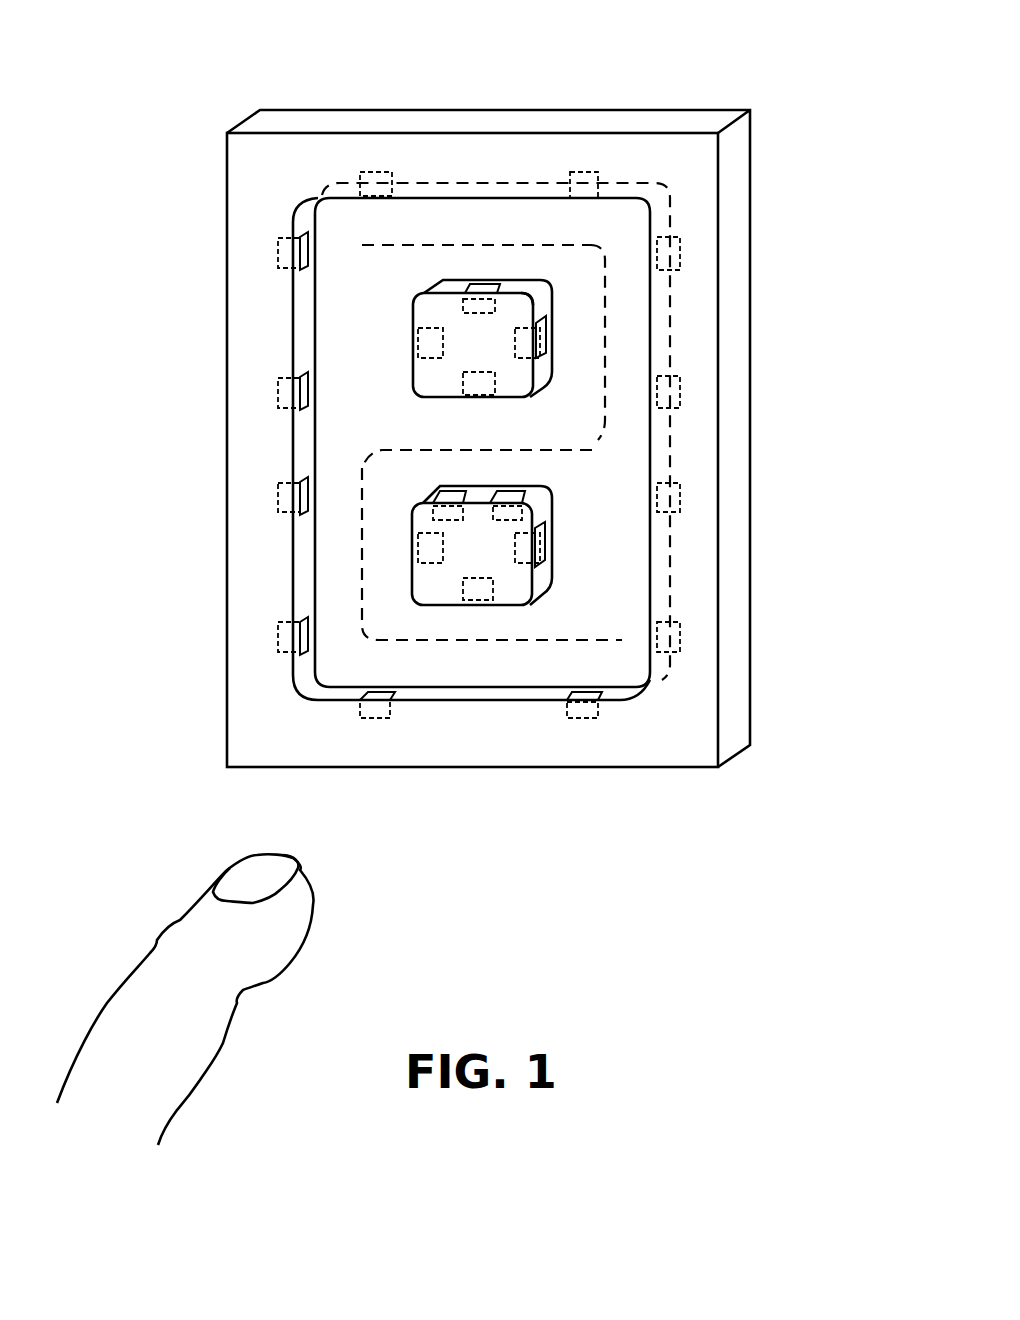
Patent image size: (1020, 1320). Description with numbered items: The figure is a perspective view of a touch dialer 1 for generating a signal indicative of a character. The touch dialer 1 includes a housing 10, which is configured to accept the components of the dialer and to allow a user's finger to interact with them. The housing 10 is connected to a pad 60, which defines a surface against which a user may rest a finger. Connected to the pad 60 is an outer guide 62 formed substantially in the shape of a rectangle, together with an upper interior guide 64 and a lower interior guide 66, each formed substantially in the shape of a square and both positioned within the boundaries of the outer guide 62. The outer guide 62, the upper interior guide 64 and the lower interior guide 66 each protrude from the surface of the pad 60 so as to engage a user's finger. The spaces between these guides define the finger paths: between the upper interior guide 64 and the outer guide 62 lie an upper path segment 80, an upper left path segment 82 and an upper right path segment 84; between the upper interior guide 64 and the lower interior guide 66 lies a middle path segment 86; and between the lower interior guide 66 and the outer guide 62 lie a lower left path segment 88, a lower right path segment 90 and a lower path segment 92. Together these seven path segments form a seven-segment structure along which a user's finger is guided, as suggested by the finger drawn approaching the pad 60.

The touch dialer 1 is at (730, 107).
The housing 10 is at (718, 248).
The pad 60 is at (367, 277).
The outer guide 62 is at (262, 520).
The upper interior guide 64 is at (512, 392).
The lower interior guide 66 is at (513, 591).
The upper path segment 80 is at (468, 258).
The upper left path segment 82 is at (367, 339).
The upper right path segment 84 is at (605, 345).
The middle path segment 86 is at (671, 446).
The lower left path segment 88 is at (357, 556).
The lower right path segment 90 is at (597, 546).
The lower path segment 92 is at (487, 668).